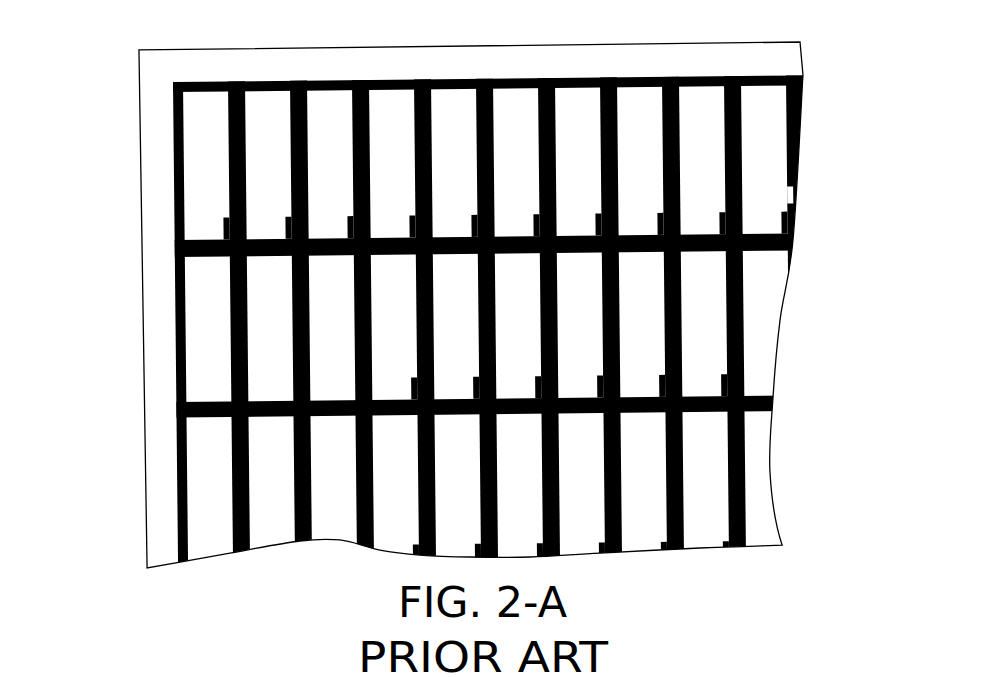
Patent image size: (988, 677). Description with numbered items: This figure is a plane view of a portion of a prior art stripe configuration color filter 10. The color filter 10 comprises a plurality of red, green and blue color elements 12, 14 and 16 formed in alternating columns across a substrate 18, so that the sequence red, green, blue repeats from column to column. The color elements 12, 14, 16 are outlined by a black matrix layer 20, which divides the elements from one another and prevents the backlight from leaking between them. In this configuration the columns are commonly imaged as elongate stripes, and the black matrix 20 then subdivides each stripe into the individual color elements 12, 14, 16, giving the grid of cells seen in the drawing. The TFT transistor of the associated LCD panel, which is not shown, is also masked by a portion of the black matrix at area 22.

The color filter 10 is at (135, 447).
The red color element 12 is at (202, 103).
The green color element 14 is at (267, 100).
The blue color element 16 is at (325, 100).
The substrate 18 is at (675, 62).
The black matrix layer 20 is at (763, 73).
The area 22 is at (798, 195).